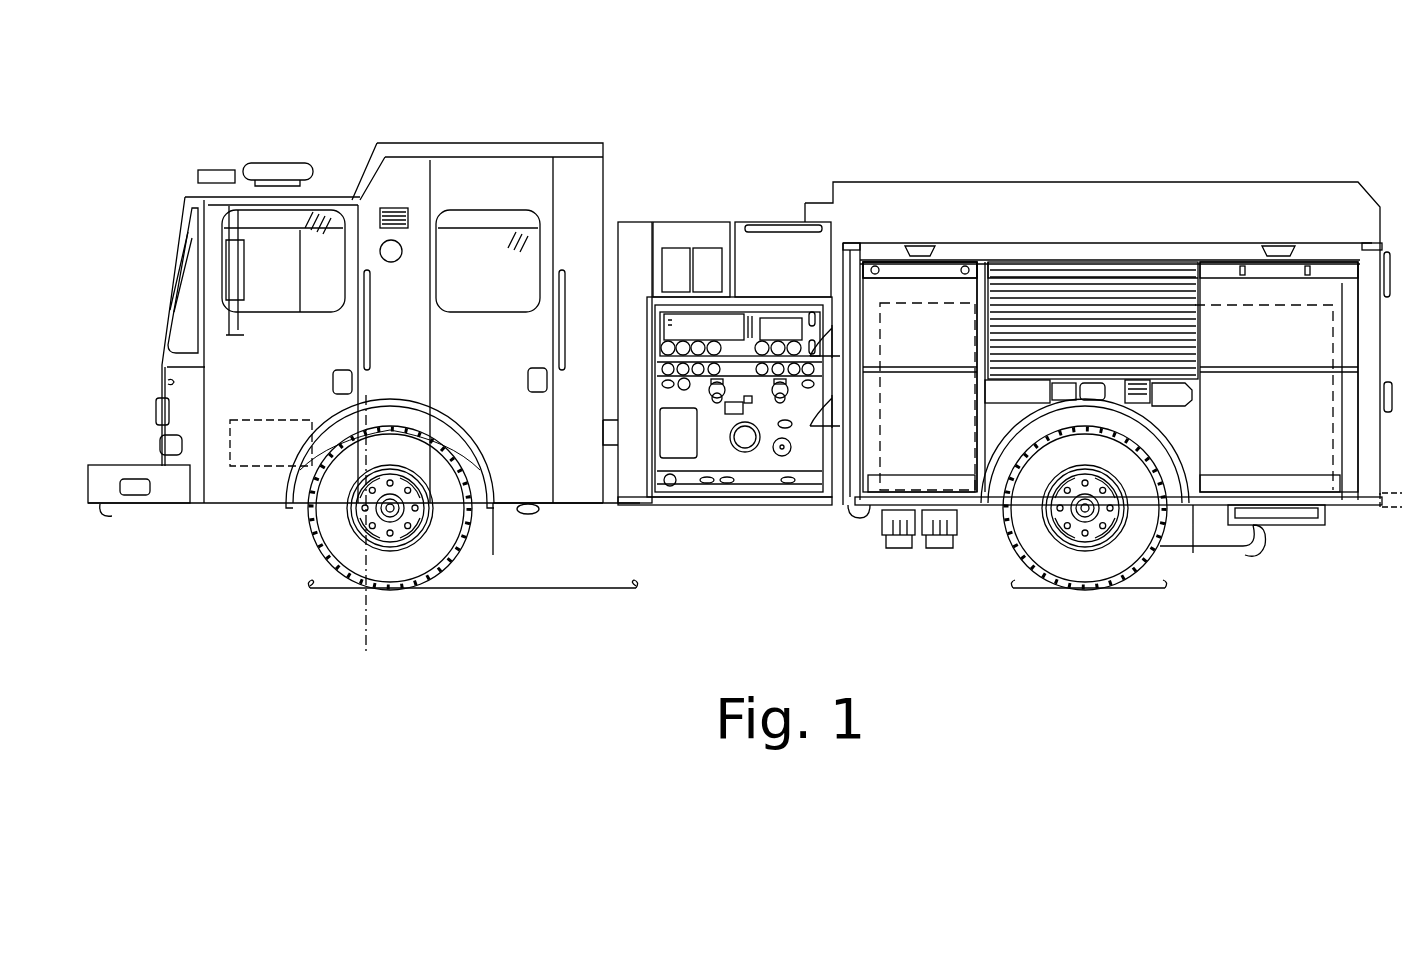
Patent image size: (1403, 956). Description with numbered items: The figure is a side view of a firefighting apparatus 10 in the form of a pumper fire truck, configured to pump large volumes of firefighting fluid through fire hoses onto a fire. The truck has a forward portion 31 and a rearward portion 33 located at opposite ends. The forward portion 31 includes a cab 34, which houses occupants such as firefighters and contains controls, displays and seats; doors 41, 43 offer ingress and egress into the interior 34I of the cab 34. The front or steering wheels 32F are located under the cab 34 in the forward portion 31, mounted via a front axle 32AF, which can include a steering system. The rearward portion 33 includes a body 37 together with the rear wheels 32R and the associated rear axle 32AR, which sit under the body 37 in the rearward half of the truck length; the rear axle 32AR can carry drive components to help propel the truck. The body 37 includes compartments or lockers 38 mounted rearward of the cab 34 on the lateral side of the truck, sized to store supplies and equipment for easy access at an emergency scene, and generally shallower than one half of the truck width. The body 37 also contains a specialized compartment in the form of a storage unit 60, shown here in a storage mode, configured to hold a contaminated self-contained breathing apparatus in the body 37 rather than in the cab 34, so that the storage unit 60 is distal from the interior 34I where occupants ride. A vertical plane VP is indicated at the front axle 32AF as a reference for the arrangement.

The firefighting apparatus 10 is at (214, 128).
The forward portion 31 is at (578, 141).
The rearward portion 33 is at (851, 152).
The cab 34 is at (192, 197).
The interior of the cab 34I is at (314, 296).
The body 37 is at (930, 182).
The compartments or lockers 38 is at (1210, 288).
The door 41 is at (252, 502).
The door 43 is at (544, 492).
The storage unit 60 is at (941, 263).
The front wheels 32F is at (442, 566).
The front axle 32AF is at (388, 514).
The rear wheels 32R is at (1105, 580).
The rear axle 32AR is at (1082, 514).
The vertical plane VP is at (362, 620).